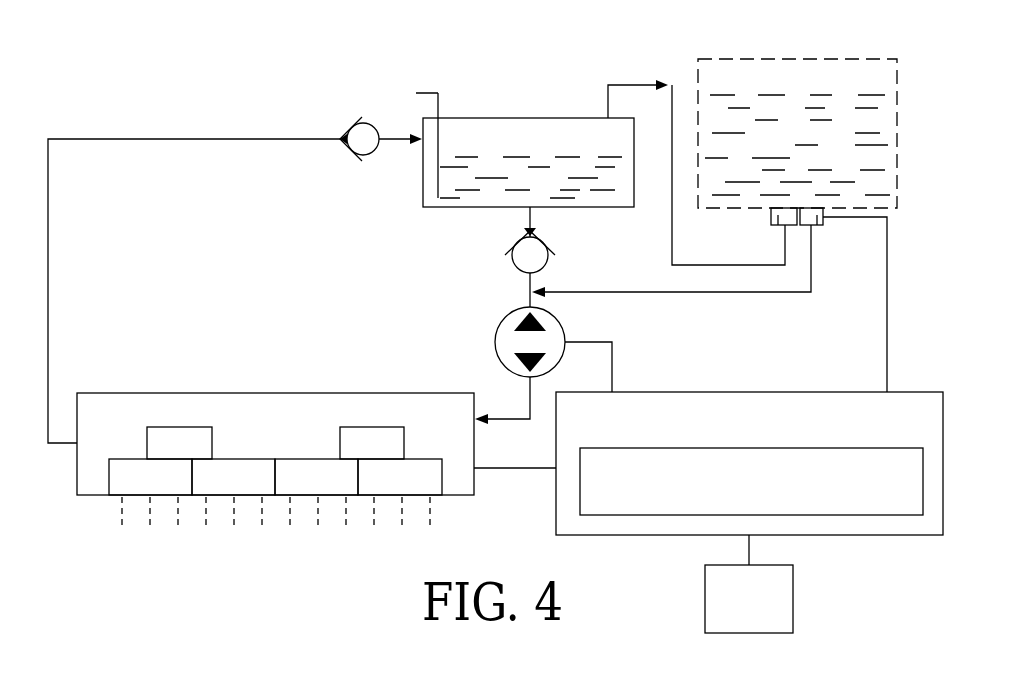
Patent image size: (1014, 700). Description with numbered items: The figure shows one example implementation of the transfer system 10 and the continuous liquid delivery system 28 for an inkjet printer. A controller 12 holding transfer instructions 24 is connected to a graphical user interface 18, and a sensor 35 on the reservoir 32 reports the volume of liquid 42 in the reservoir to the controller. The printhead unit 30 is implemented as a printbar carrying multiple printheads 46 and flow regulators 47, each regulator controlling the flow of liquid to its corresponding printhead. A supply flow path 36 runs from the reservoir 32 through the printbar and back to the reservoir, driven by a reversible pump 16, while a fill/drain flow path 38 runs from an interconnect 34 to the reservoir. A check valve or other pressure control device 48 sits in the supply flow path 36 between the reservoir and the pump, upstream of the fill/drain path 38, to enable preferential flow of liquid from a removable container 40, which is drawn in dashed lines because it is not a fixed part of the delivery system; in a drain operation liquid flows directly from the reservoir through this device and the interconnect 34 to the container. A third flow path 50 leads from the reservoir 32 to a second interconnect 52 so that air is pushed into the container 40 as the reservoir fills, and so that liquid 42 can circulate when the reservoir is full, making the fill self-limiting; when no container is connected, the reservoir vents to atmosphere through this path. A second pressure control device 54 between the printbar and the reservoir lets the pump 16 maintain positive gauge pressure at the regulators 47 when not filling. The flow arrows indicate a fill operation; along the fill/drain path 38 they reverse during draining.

The transfer system 10 is at (288, 93).
The controller 12 is at (914, 400).
The reversible pump 16 is at (497, 340).
The graphical user interface 18 is at (780, 597).
The transfer instructions 24 is at (812, 458).
The continuous liquid delivery system 28 is at (360, 213).
The printhead unit 30 is at (196, 405).
The reservoir 32 is at (548, 128).
The interconnect 34 is at (818, 228).
The sensor 35 is at (440, 100).
The supply flow path 36 is at (148, 138).
The fill/drain flow path 38 is at (681, 294).
The removable container 40 is at (865, 57).
The liquid 42 is at (470, 188).
The printheads 46 is at (128, 468).
The flow regulators 47 is at (168, 428).
The pressure control device 48 is at (516, 266).
The third flow path 50 is at (610, 100).
The second interconnect 52 is at (778, 228).
The pressure control device 54 is at (371, 131).